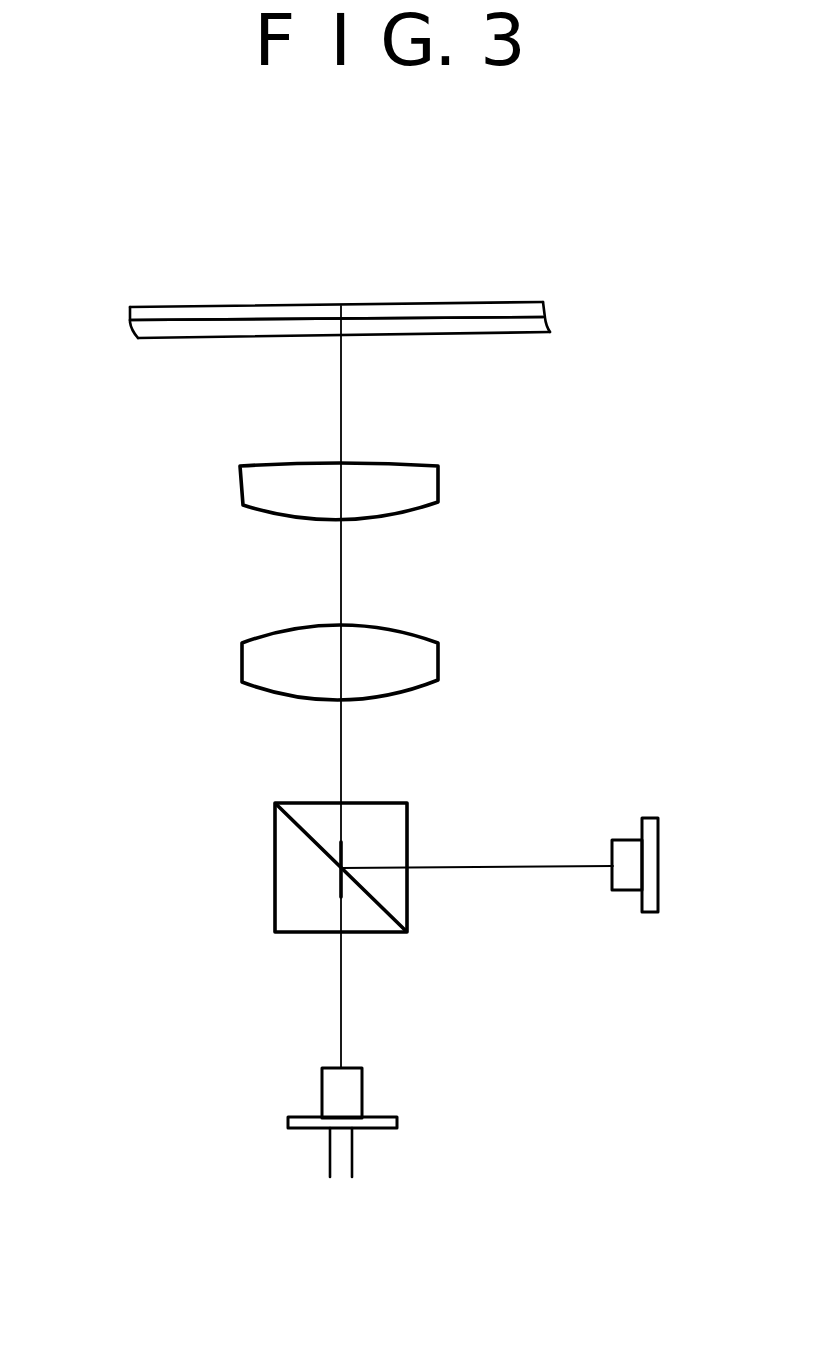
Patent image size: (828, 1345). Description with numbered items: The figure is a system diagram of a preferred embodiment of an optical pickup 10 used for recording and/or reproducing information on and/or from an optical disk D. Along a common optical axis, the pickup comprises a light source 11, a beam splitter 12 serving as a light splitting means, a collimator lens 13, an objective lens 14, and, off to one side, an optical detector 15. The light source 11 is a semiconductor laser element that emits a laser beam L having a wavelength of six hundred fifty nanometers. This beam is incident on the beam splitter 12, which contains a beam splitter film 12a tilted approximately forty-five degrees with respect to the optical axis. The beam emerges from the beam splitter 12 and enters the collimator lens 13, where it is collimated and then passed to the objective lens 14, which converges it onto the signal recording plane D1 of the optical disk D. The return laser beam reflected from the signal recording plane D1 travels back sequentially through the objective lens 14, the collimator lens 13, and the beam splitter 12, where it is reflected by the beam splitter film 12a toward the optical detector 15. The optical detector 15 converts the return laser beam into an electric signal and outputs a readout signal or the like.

The optical pickup 10 is at (142, 497).
The light source 11 is at (325, 1083).
The beam splitter 12 is at (275, 898).
The beam splitter film 12a is at (297, 830).
The collimator lens 13 is at (438, 662).
The objective lens 14 is at (438, 483).
The optical detector 15 is at (625, 882).
The optical disk D is at (482, 302).
The signal recording plane D1 is at (465, 318).
The laser beam L is at (343, 998).